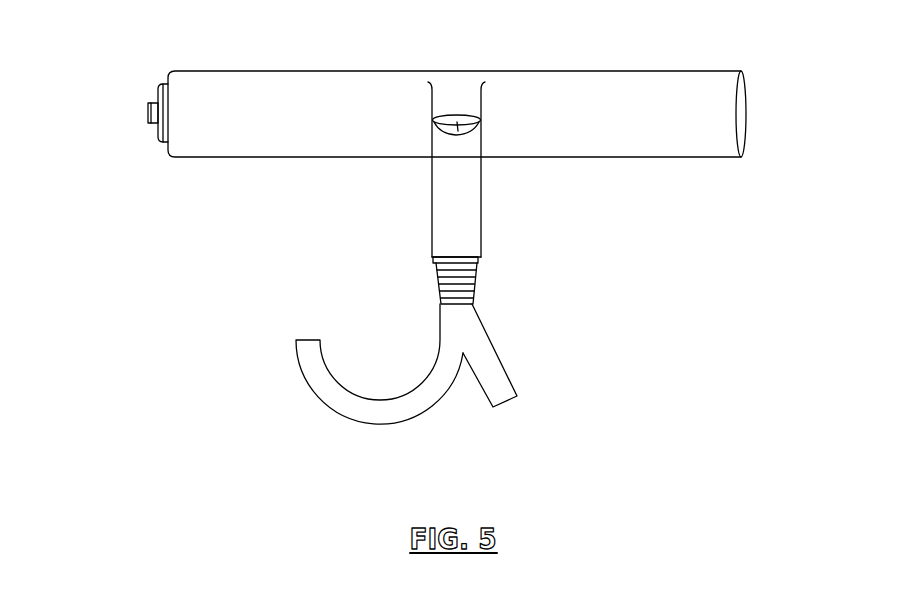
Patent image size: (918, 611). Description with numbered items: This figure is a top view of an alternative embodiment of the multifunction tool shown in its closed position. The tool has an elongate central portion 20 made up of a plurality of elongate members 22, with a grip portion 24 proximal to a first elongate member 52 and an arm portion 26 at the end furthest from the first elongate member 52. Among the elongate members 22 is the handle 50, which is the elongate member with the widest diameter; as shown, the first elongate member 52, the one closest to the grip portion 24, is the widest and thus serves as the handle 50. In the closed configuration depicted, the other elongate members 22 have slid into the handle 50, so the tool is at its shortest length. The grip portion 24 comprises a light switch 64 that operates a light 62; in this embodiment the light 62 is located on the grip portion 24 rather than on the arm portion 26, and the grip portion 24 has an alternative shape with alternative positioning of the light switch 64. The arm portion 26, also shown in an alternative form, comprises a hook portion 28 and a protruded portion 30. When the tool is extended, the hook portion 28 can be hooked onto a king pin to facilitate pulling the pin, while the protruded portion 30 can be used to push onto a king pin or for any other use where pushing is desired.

The elongate central portion 20 is at (463, 193).
The elongate members 22 is at (472, 262).
The grip portion 24 is at (178, 60).
The arm portion 26 is at (404, 398).
The hook portion 28 is at (393, 412).
The protruded portion 30 is at (500, 377).
The handle 50 is at (466, 197).
The first elongate member 52 is at (470, 230).
The light 62 is at (460, 130).
The light switch 64 is at (148, 113).